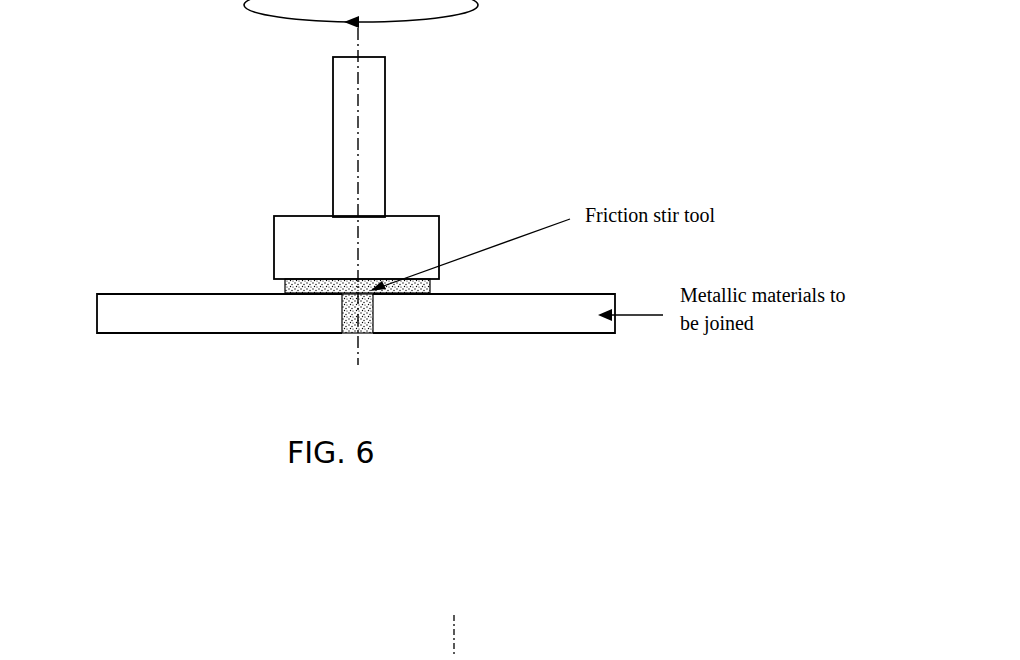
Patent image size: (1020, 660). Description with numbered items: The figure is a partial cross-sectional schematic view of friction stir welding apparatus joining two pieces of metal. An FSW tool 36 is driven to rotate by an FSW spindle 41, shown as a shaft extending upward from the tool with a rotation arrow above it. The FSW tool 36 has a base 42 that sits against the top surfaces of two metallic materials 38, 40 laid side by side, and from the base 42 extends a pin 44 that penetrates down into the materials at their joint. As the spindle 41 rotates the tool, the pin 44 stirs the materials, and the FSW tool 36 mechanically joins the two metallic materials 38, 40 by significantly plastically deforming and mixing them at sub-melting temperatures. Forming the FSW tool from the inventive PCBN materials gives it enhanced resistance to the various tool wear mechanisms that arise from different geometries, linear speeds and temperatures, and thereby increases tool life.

The FSW tool 36 is at (432, 288).
The metallic material 38 is at (98, 312).
The metallic material 40 is at (572, 320).
The FSW spindle 41 is at (397, 147).
The base 42 is at (285, 286).
The pin 44 is at (345, 333).